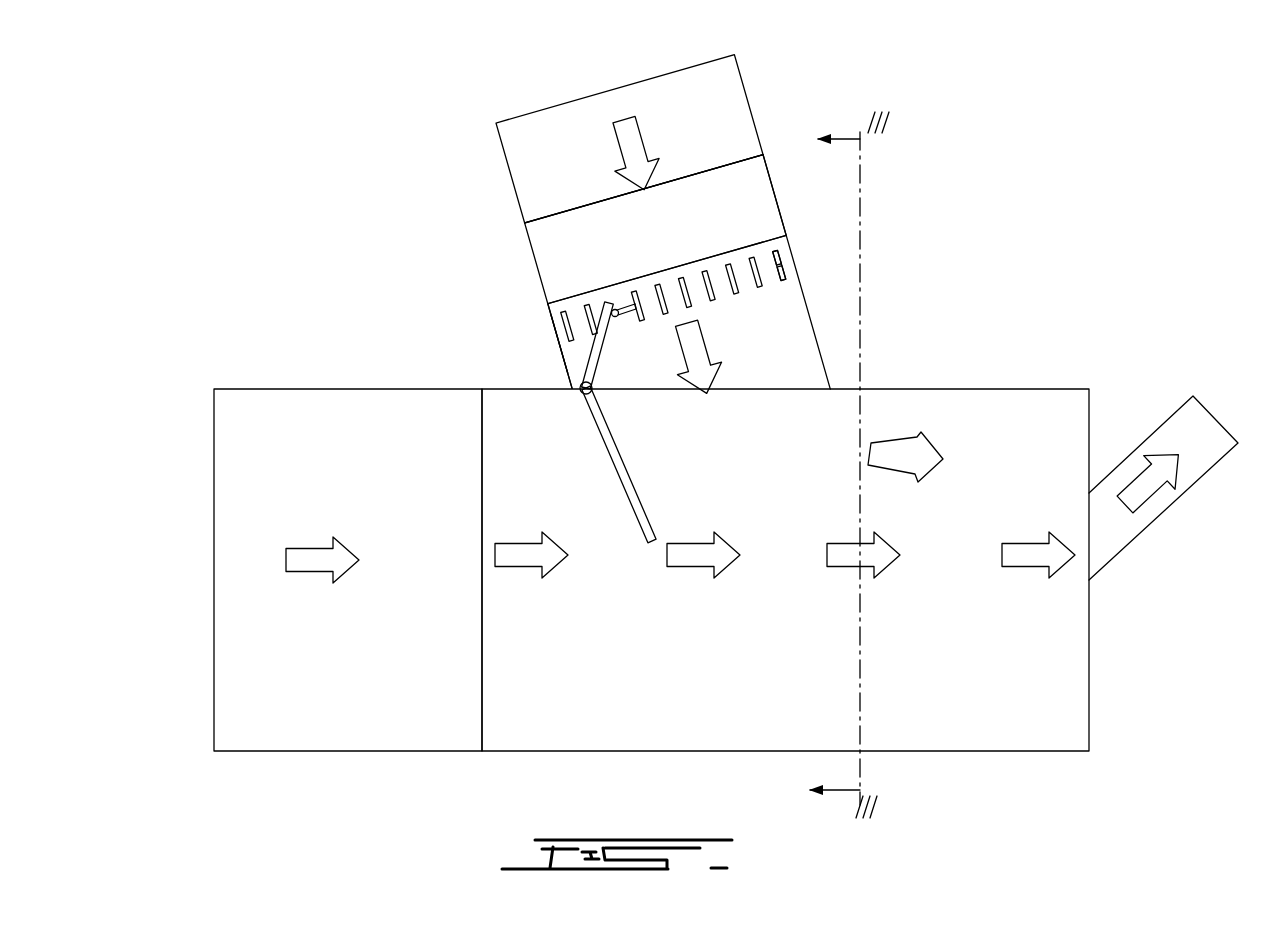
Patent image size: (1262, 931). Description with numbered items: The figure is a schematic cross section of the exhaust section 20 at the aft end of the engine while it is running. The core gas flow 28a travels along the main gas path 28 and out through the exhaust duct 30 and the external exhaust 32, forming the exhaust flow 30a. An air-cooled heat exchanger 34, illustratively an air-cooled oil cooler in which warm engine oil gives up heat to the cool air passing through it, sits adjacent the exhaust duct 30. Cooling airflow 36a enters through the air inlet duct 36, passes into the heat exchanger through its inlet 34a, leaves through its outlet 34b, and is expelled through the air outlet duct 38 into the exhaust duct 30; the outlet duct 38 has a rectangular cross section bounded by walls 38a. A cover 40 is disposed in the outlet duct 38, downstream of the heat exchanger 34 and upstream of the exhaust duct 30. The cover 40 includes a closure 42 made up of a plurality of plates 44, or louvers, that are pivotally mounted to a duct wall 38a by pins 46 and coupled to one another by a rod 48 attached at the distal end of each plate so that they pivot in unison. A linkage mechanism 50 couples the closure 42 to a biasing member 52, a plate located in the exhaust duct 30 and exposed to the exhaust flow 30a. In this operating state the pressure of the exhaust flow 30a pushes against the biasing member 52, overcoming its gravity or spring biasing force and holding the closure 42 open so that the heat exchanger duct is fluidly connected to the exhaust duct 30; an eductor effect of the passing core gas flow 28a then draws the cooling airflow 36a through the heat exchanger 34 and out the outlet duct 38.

The exhaust section 20 is at (1063, 330).
The main gas path 28 is at (426, 699).
The core gas flow 28a is at (317, 563).
The exhaust duct 30 is at (723, 698).
The exhaust flow 30a is at (525, 555).
The external exhaust 32 is at (1148, 533).
The air-cooled heat exchanger 34 is at (779, 155).
The inlet 34a is at (582, 205).
The outlet 34b is at (610, 283).
The air inlet duct 36 is at (744, 65).
The cooling airflow 36a is at (623, 130).
The air outlet duct 38 is at (822, 321).
The wall 38a is at (548, 325).
The cover 40 is at (548, 345).
The closure 42 is at (802, 242).
The plates 44 is at (782, 273).
The pins 46 is at (782, 263).
The rod 48 is at (773, 285).
The linkage mechanism 50 is at (574, 373).
The biasing member 52 is at (612, 469).